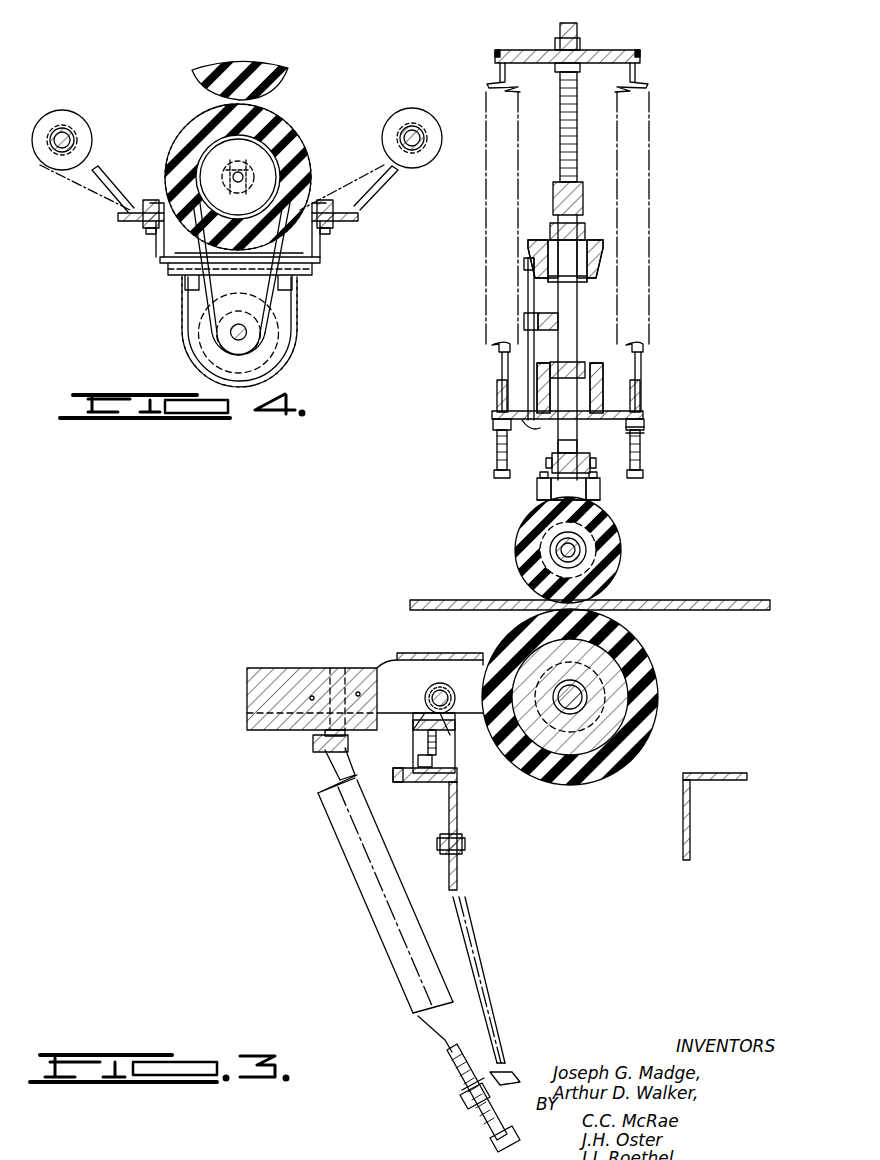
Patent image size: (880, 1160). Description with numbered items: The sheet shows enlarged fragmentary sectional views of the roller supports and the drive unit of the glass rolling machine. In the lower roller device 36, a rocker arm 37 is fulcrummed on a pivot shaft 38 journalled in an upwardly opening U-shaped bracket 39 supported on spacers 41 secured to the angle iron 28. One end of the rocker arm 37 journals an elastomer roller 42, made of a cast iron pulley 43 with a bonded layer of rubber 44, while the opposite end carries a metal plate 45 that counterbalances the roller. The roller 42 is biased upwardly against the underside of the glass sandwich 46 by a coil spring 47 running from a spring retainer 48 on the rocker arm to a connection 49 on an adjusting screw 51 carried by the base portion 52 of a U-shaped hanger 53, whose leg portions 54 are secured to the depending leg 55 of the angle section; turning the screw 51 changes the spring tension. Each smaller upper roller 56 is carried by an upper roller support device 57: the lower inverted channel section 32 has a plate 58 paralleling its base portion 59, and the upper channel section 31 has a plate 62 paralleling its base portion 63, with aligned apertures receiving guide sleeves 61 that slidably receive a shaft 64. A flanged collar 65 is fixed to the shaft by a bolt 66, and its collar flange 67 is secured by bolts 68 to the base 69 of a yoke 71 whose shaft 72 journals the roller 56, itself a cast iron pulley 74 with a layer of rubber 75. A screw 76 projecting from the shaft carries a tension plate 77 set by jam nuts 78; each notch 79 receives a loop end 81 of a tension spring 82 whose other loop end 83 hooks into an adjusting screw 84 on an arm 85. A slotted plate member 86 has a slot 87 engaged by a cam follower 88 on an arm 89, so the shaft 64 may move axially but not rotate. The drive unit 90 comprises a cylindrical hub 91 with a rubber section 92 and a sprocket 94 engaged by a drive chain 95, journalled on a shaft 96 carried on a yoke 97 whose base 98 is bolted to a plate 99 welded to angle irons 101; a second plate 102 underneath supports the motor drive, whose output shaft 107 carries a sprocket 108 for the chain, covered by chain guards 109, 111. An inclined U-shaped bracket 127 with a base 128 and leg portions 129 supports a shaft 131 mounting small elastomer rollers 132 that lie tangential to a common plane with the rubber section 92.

In FIG. 3, the angle iron 28 is at (403, 784).
In FIG. 3, the upper channel section 31 is at (600, 262).
In FIG. 3, the lower inverted channel section 32 is at (515, 420).
In FIG. 3, the lower roller device 36 is at (347, 932).
In FIG. 3, the rocker arm 37 is at (425, 655).
In FIG. 3, the pivot shaft 38 is at (448, 688).
In FIG. 3, the U-shaped bracket 39 is at (420, 720).
In FIG. 3, the spacers 41 is at (455, 745).
In FIG. 3, the elastomer roller 42 is at (670, 683).
In FIG. 3, the cast iron pulley 43 is at (612, 700).
In FIG. 3, the layer of rubber 44 is at (640, 728).
In FIG. 3, the metal plate 45 is at (247, 712).
In FIG. 3, the glass sandwich 46 is at (435, 602).
In FIG. 3, the coil spring 47 is at (352, 870).
In FIG. 3, the spring retainer 48 is at (318, 754).
In FIG. 3, the connection 49 is at (450, 1058).
In FIG. 3, the adjusting screw 51 is at (478, 1128).
In FIG. 3, the base portion 52 is at (640, 440).
In FIG. 3, the U-shaped hanger 53 is at (500, 980).
In FIG. 3, the leg portions 54 is at (458, 876).
In FIG. 3, the depending leg 55 is at (460, 806).
In FIG. 4, the upper elastomer roller 56 is at (288, 68).
In FIG. 3, the upper elastomer roller 56 is at (620, 538).
In FIG. 3, the upper roller support device 57 is at (678, 113).
In FIG. 3, the plate 58 is at (540, 428).
In FIG. 3, the base portion 59 is at (590, 365).
In FIG. 3, the guide sleeve 61 is at (588, 230).
In FIG. 3, the plate 62 is at (590, 240).
In FIG. 3, the base portion 63 is at (590, 282).
In FIG. 3, the shaft 64 is at (572, 302).
In FIG. 3, the flanged collar 65 is at (576, 455).
In FIG. 3, the bolt 66 is at (552, 462).
In FIG. 3, the collar flange 67 is at (537, 486).
In FIG. 3, the bolts 68 is at (600, 486).
In FIG. 3, the base 69 is at (537, 498).
In FIG. 3, the yoke 71 is at (598, 498).
In FIG. 3, the shaft 72 is at (618, 544).
In FIG. 3, the cast iron pulley 74 is at (540, 552).
In FIG. 3, the layer of rubber 75 is at (552, 568).
In FIG. 3, the screw 76 is at (560, 135).
In FIG. 3, the tension plate 77 is at (595, 50).
In FIG. 3, the jam nuts 78 is at (577, 32).
In FIG. 3, the notch 79 is at (500, 48).
In FIG. 3, the loop end 81 is at (500, 70).
In FIG. 3, the tension spring 82 is at (650, 146).
In FIG. 3, the loop end 83 is at (500, 374).
In FIG. 3, the adjusting screw 84 is at (498, 395).
In FIG. 3, the arm 85 is at (510, 418).
In FIG. 3, the slotted plate member 86 is at (525, 266).
In FIG. 3, the slot 87 is at (528, 300).
In FIG. 3, the cam follower 88 is at (524, 325).
In FIG. 3, the arm 89 is at (500, 342).
In FIG. 4, the drive unit 90 is at (359, 99).
In FIG. 4, the cylindrical hub 91 is at (238, 177).
In FIG. 4, the rubber section 92 is at (262, 118).
In FIG. 4, the sprocket 94 is at (310, 172).
In FIG. 4, the drive chain 95 is at (262, 325).
In FIG. 4, the shaft 96 is at (192, 158).
In FIG. 4, the yoke 97 is at (282, 243).
In FIG. 4, the base 98 is at (200, 262).
In FIG. 4, the plate 99 is at (184, 290).
In FIG. 4, the angle irons 101 is at (158, 238).
In FIG. 4, the second plate 102 is at (270, 300).
In FIG. 4, the output shaft 107 is at (246, 332).
In FIG. 4, the sprocket 108 is at (214, 332).
In FIG. 4, the chain guard 109 is at (318, 200).
In FIG. 4, the chain guard 111 is at (282, 362).
In FIG. 4, the U-shaped bracket 127 is at (92, 212).
In FIG. 4, the base 128 is at (150, 212).
In FIG. 4, the leg portions 129 is at (62, 172).
In FIG. 4, the shaft 131 is at (68, 136).
In FIG. 4, the small elastomer rollers 132 is at (74, 112).